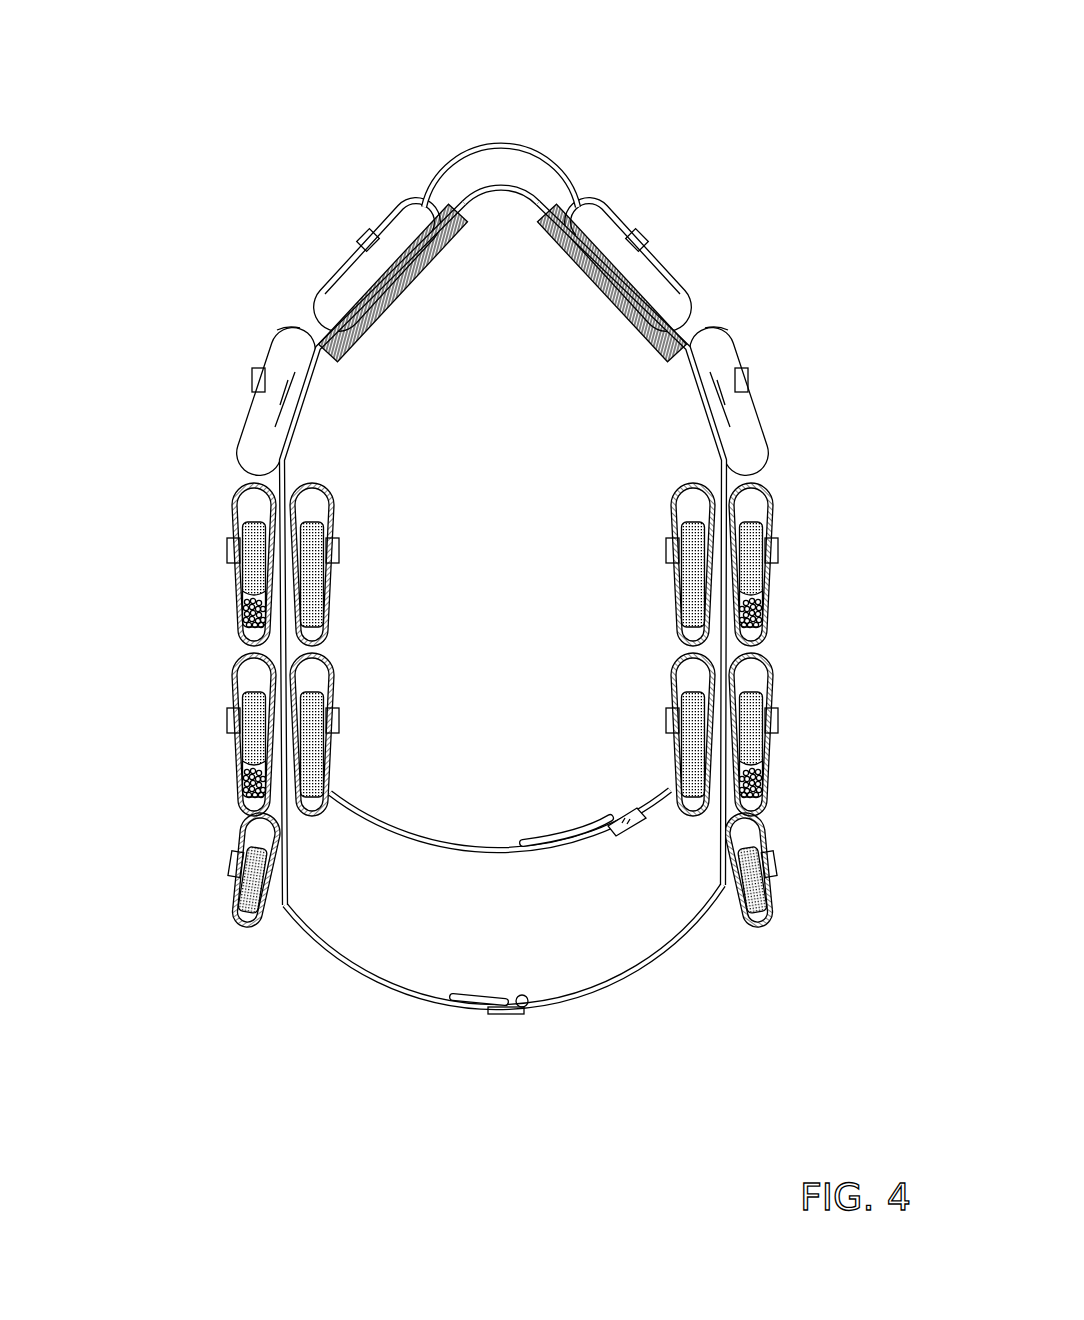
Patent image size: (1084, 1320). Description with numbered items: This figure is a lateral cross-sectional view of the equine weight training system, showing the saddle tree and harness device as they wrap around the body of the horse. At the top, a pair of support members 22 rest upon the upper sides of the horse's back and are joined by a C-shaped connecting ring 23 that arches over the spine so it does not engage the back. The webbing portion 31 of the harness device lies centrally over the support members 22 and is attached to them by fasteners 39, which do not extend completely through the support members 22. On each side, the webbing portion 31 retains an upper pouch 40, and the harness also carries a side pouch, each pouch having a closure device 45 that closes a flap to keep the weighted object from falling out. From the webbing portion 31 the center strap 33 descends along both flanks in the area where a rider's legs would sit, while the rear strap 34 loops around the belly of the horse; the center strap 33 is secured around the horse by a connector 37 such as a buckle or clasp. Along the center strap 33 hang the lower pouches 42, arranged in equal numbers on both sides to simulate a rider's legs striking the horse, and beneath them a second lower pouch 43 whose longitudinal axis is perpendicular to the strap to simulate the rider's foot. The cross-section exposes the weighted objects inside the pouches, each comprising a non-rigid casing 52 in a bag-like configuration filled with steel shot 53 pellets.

The support member 22 is at (398, 280).
The connecting ring 23 is at (508, 145).
The webbing portion 31 is at (456, 200).
The center strap 33 is at (398, 985).
The rear strap 34 is at (428, 835).
The connector 37 is at (641, 805).
The fastener 39 is at (396, 322).
The upper pouch 40 is at (750, 410).
The lower pouch 42 is at (770, 744).
The second lower pouch 43 is at (776, 892).
The closure device 45 is at (252, 375).
The casing 52 is at (250, 712).
The shot 53 is at (247, 606).